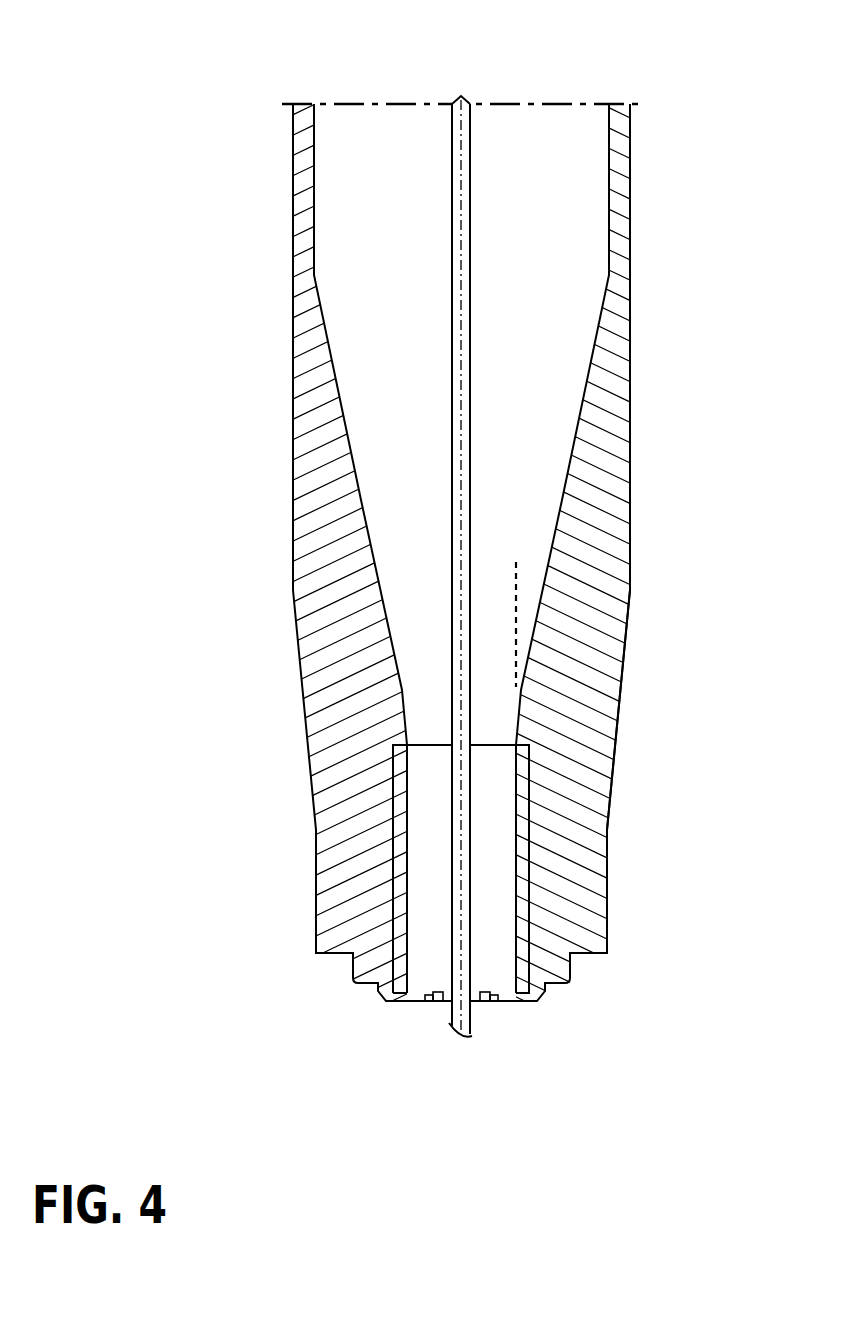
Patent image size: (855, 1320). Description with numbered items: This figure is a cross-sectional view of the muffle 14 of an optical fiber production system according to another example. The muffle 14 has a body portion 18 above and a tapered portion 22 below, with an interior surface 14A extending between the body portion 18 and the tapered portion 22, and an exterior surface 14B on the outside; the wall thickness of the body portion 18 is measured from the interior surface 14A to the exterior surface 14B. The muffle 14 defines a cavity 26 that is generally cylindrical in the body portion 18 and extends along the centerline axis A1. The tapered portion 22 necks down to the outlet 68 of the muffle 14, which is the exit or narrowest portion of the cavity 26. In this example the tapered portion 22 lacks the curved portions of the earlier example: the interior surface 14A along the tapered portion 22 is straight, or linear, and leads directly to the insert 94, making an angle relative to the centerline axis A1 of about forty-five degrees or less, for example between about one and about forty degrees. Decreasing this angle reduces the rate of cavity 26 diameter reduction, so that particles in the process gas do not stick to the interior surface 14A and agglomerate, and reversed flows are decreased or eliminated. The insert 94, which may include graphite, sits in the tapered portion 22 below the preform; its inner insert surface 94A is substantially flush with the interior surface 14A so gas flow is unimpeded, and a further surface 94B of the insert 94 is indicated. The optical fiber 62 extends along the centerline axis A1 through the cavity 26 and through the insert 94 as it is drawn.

The muffle 14 is at (485, 545).
The interior surface 14A is at (548, 557).
The exterior surface 14B is at (618, 743).
The body portion 18 is at (287, 237).
The tapered portion 22 is at (633, 633).
The cavity 26 is at (404, 320).
The optical fiber 62 is at (452, 194).
The outlet 68 is at (430, 740).
The insert 94 is at (519, 809).
The inner insert surface 94A is at (400, 887).
The sleeve upper portion 94B is at (393, 806).
The centerline axis A1 is at (470, 129).